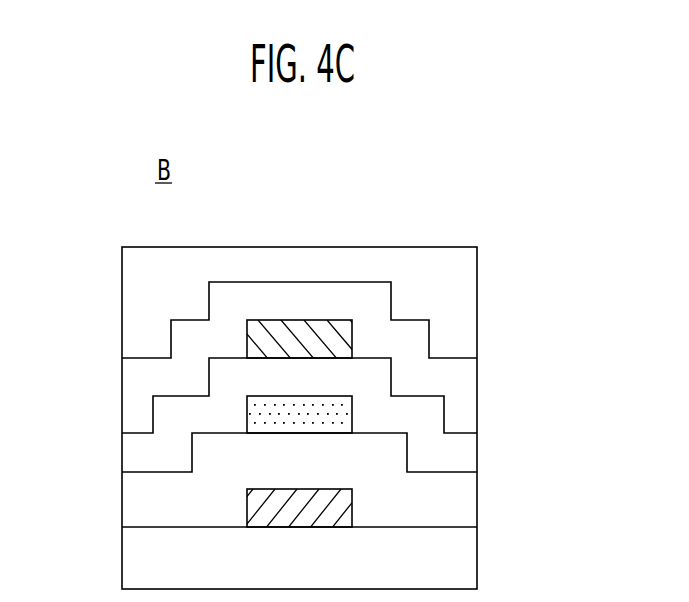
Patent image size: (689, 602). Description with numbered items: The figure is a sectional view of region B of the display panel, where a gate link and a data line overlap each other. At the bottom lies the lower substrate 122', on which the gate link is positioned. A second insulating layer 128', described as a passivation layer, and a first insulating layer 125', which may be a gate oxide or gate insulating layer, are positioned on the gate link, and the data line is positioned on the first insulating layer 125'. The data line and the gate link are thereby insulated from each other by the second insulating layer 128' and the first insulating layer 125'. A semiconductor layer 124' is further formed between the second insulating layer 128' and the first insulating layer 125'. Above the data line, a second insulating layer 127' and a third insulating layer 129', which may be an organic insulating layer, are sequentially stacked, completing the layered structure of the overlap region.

The lower substrate 122' is at (261, 552).
The second insulating layer 128' is at (215, 514).
The first insulating layer 125' is at (261, 452).
The semiconductor layer 124' is at (398, 416).
The second insulating layer 127' is at (261, 395).
The third insulating layer 129' is at (261, 320).